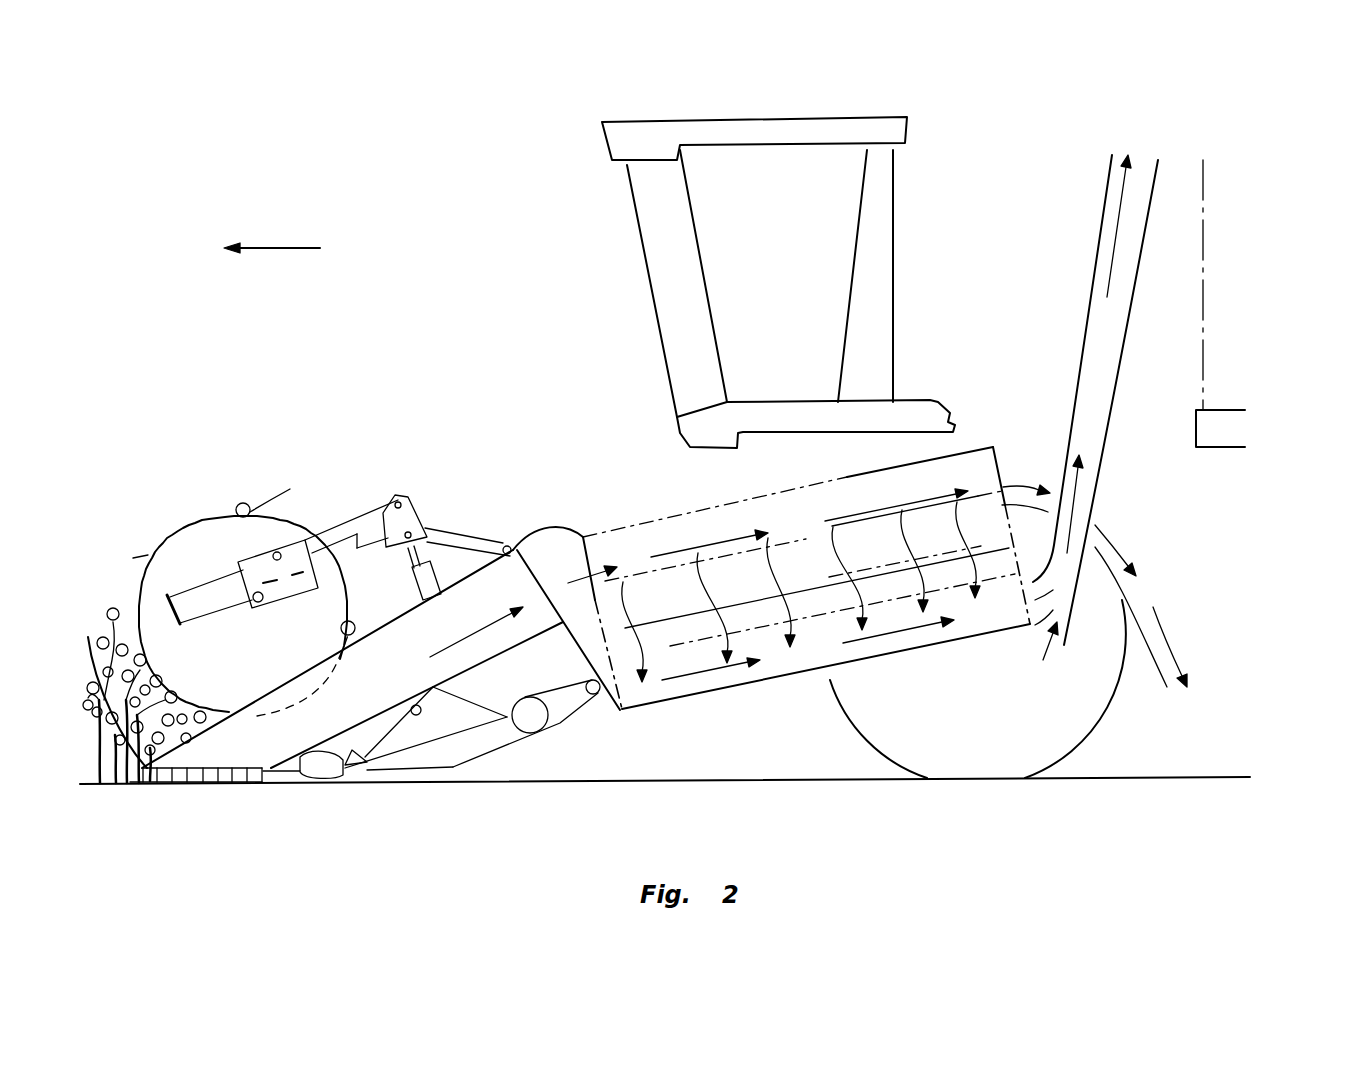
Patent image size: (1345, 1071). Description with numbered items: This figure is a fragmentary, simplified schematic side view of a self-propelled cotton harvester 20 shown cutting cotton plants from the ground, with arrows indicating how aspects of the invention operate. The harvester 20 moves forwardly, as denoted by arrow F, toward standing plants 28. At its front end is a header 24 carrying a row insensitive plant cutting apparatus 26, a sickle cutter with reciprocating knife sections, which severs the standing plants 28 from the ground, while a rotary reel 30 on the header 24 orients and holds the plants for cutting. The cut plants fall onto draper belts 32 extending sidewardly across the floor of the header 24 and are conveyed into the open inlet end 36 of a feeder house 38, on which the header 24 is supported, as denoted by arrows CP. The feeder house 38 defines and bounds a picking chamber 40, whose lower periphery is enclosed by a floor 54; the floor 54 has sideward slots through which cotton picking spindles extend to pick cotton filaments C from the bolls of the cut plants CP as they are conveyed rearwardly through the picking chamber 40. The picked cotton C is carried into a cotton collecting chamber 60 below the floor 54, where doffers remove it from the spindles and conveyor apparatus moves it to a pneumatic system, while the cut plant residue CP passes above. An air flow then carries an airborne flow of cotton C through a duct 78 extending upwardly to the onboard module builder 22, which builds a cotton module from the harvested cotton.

The cotton harvester 20 is at (1288, 193).
The module builder 22 is at (1192, 197).
The header 24 is at (315, 522).
The plant cutting apparatus 26 is at (287, 787).
The standing plants 28 is at (113, 607).
The rotary reel 30 is at (188, 527).
The draper belts 32 is at (420, 716).
The inlet end 36 is at (583, 537).
The feeder house 38 is at (788, 687).
The picking chamber 40 is at (670, 531).
The floor 54 is at (787, 537).
The cotton collecting chamber 60 is at (654, 692).
The ducts 78 is at (1087, 318).
The cotton C is at (1117, 235).
The cut plants CP is at (473, 627).
The forward direction arrow F is at (282, 248).